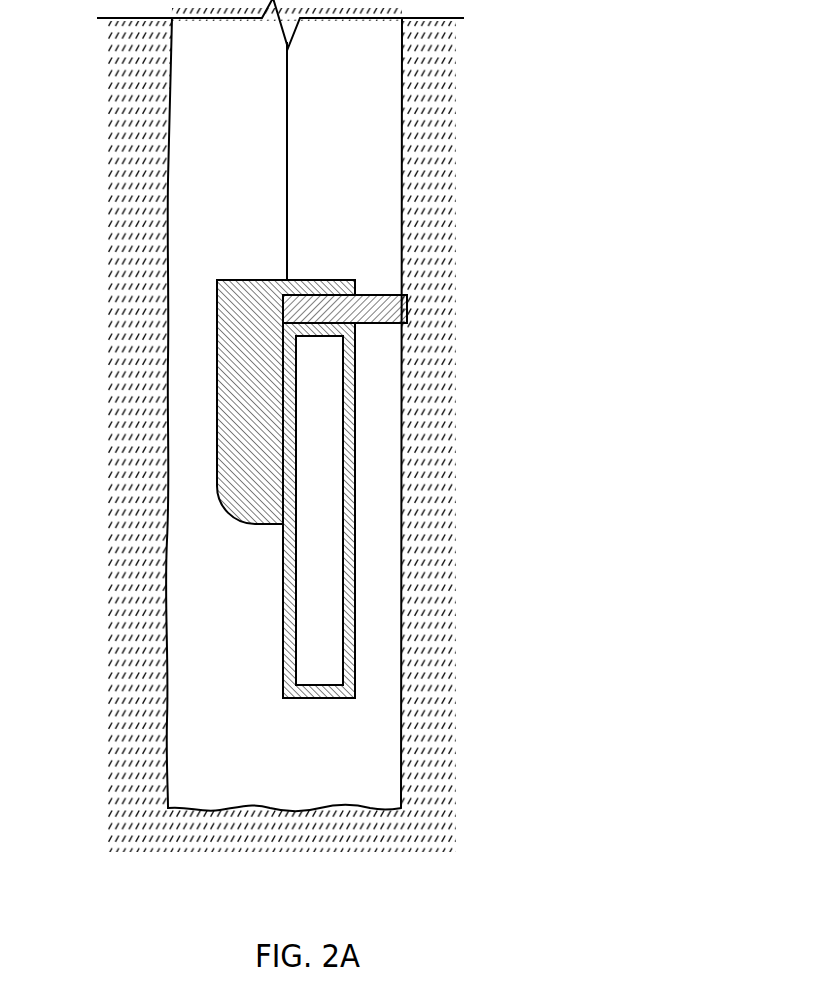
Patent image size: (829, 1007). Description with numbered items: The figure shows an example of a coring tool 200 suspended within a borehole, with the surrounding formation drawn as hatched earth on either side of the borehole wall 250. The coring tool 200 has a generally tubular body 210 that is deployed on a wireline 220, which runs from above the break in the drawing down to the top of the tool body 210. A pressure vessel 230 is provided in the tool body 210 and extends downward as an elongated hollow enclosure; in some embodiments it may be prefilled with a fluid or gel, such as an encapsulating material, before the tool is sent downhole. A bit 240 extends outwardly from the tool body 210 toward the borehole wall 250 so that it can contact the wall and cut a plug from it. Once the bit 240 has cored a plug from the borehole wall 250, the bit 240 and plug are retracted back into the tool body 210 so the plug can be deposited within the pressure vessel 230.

The coring tool 200 is at (221, 263).
The tool body 210 is at (232, 355).
The wireline 220 is at (287, 122).
The pressure vessel 230 is at (332, 552).
The bit 240 is at (408, 302).
The borehole wall 250 is at (168, 740).